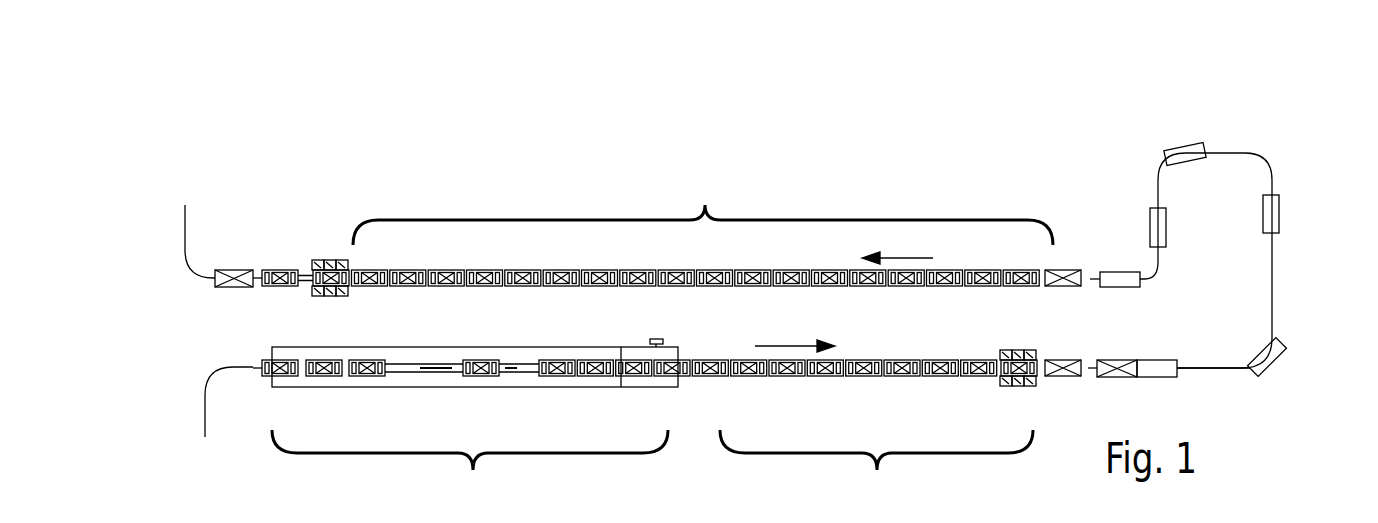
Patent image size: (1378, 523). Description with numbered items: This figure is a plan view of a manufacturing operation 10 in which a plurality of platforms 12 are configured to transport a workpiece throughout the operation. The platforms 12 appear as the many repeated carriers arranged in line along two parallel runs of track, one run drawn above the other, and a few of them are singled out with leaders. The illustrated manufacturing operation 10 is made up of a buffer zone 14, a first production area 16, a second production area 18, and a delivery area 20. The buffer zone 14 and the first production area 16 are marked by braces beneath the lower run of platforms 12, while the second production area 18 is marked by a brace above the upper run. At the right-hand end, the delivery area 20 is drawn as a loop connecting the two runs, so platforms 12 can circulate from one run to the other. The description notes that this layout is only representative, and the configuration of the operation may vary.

The manufacturing operation 10 is at (878, 143).
The platform 12 is at (525, 270).
The buffer zone 14 is at (476, 419).
The first production area 16 is at (862, 430).
The second production area 18 is at (703, 231).
The delivery area 20 is at (1300, 277).